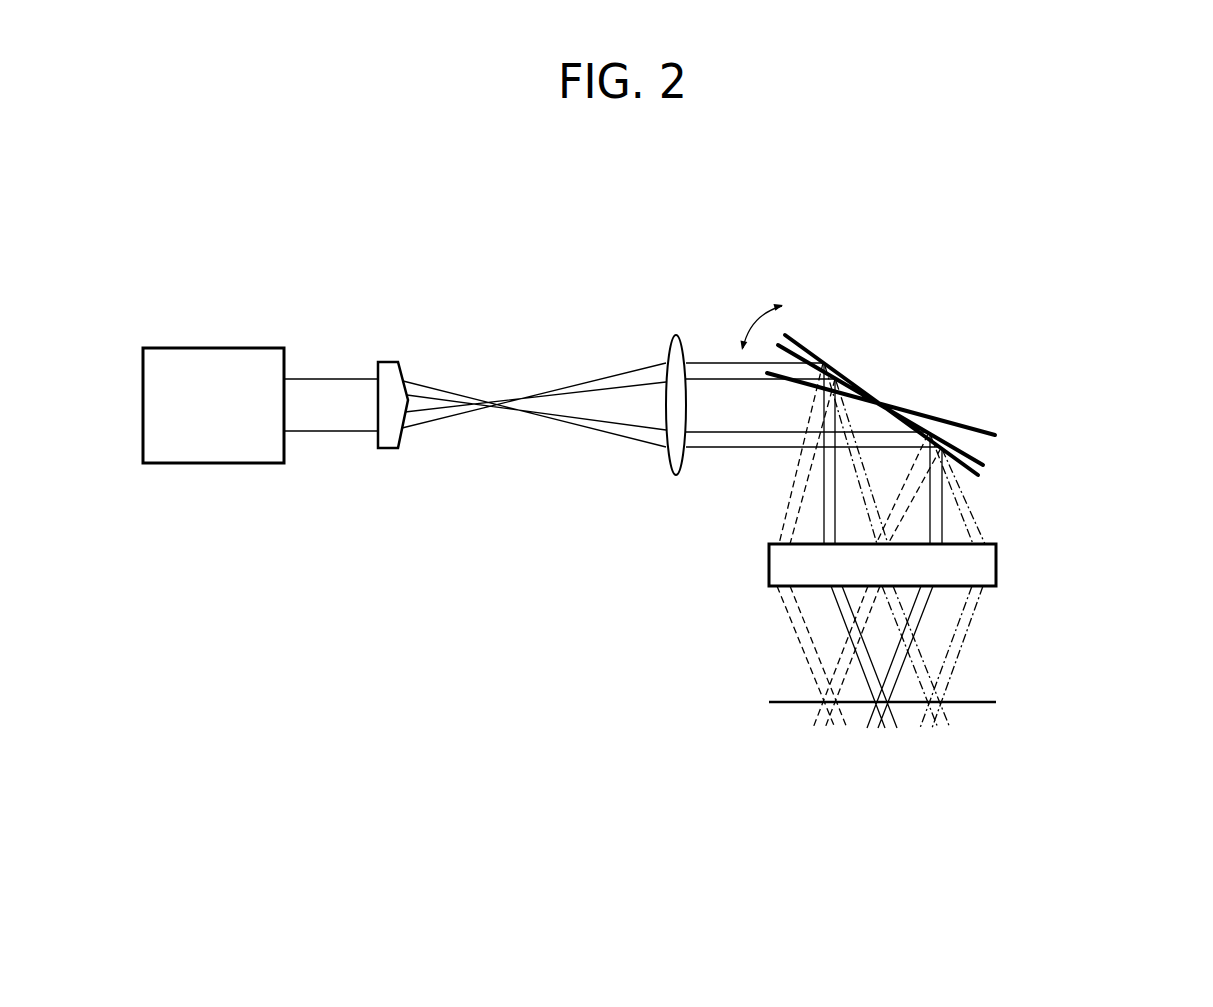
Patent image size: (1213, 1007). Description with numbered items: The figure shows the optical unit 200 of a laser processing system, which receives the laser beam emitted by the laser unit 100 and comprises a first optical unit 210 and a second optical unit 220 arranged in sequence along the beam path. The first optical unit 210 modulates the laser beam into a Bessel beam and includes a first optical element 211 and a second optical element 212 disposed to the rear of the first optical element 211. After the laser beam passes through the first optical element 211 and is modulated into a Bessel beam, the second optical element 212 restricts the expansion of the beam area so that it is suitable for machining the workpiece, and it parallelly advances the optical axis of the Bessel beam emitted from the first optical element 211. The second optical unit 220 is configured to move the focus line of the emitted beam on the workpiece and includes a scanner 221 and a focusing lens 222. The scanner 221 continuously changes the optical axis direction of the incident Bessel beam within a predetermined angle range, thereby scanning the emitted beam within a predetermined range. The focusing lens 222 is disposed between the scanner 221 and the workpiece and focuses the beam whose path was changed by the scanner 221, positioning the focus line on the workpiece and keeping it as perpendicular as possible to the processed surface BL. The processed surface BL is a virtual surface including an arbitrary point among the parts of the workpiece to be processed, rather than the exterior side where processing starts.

The laser unit 100 is at (214, 348).
The first optical unit 210 is at (697, 274).
The first optical element 211 is at (388, 362).
The second optical element 212 is at (676, 335).
The optical unit 200 is at (752, 279).
The second optical unit 220 is at (1103, 485).
The scanner 221 is at (970, 423).
The focusing lens 222 is at (997, 565).
The processed surface BL is at (990, 702).